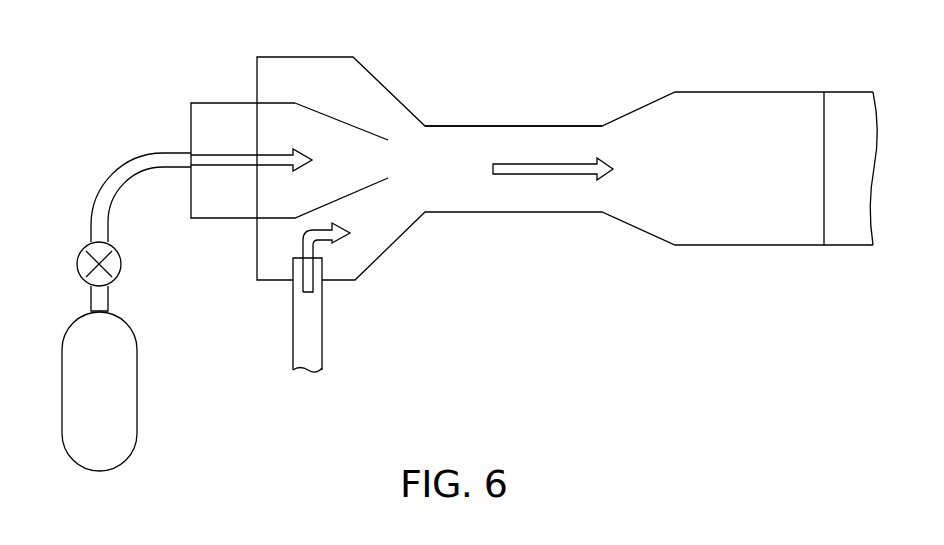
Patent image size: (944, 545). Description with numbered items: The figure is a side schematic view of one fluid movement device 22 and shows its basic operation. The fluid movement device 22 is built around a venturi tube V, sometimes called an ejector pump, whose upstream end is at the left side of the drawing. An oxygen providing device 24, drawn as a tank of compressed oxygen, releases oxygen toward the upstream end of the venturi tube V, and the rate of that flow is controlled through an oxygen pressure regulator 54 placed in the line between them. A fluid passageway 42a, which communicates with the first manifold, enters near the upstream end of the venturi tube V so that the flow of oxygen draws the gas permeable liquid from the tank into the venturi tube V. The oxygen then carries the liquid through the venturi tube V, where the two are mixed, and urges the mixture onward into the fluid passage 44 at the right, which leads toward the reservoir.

The fluid movement device 22 is at (757, 51).
The oxygen providing device 24 is at (137, 362).
The fluid passageway 42a is at (322, 331).
The fluid passage 44 is at (847, 246).
The oxygen pressure regulator 54 is at (77, 259).
The venturi tube V is at (469, 126).